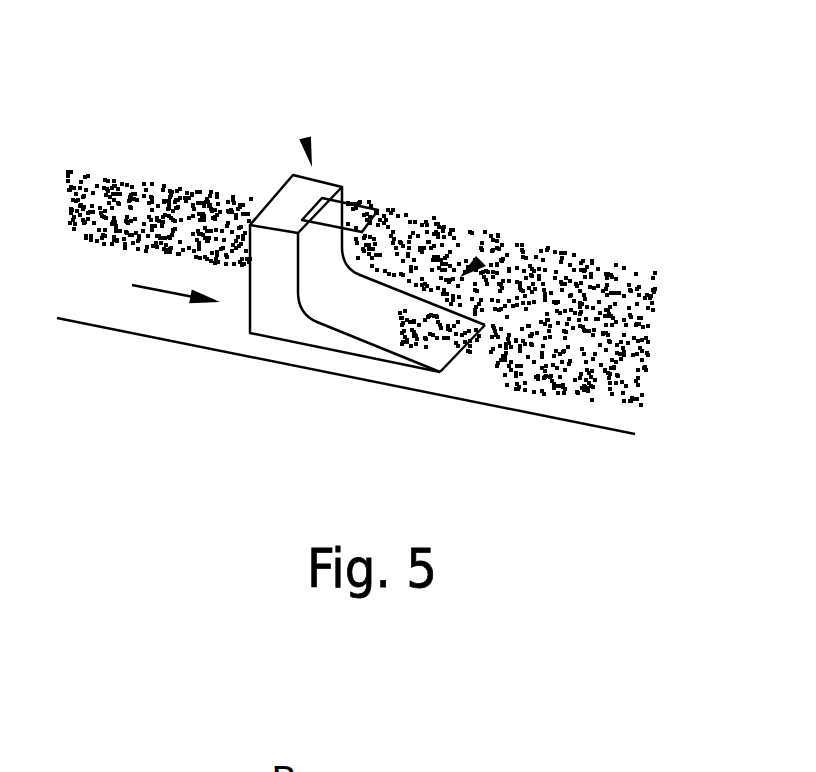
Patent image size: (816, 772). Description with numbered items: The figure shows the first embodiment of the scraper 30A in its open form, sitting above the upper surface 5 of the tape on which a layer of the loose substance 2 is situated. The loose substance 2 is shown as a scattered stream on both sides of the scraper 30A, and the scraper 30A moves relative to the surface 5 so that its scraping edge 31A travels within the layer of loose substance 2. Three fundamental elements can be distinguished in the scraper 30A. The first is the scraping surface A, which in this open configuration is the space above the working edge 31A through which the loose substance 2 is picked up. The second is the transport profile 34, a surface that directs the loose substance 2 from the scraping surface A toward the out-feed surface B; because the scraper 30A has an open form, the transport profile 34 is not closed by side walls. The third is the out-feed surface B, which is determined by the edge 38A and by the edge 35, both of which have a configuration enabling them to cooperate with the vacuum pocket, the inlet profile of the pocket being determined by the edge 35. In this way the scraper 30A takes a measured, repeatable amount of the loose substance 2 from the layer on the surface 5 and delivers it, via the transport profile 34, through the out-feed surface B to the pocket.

The loose substance 2 is at (577, 333).
The upper surface of the tape 5 is at (185, 318).
The scraper 30A is at (273, 210).
The scraping edge 31A is at (453, 363).
The transport profile 34 is at (348, 312).
The edge 35 is at (365, 205).
The edge 38A is at (340, 185).
The scraping surface A is at (480, 262).
The out-feed surface B is at (306, 141).